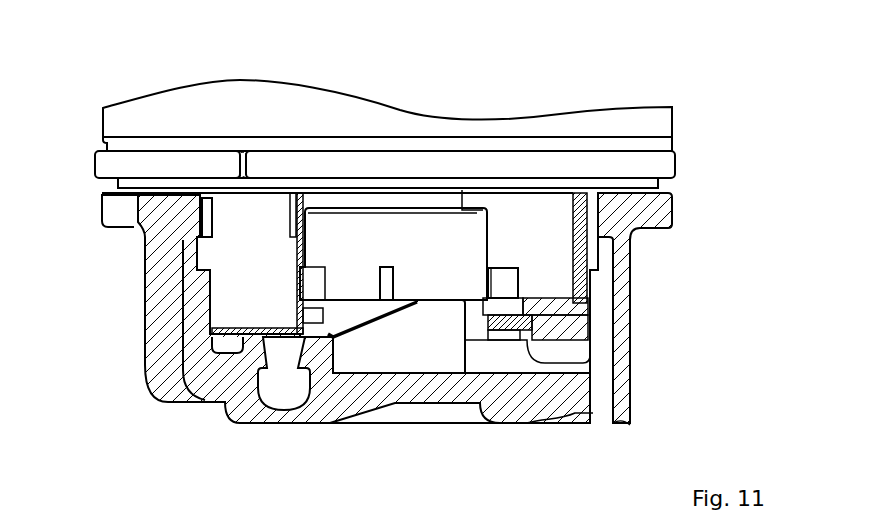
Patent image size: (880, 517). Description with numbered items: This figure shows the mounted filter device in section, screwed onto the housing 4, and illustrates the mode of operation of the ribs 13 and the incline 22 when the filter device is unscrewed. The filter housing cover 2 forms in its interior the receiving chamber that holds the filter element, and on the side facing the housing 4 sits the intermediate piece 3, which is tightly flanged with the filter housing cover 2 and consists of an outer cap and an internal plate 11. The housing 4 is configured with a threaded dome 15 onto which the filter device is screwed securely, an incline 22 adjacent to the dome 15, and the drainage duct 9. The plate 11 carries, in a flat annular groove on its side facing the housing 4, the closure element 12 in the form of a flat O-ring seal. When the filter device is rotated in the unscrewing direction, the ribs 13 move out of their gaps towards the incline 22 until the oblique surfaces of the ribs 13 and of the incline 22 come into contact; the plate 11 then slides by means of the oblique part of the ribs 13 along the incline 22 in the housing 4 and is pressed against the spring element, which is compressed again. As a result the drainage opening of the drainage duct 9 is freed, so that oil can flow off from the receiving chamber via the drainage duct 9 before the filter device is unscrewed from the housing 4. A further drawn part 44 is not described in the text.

The filter housing cover 2 is at (358, 108).
The intermediate piece 3 is at (240, 218).
The housing 4 is at (142, 305).
The drainage duct 9 is at (287, 393).
The plate 11 is at (580, 252).
The closure element 12 is at (580, 350).
The ribs 13 is at (362, 307).
The dome 15 is at (476, 240).
The incline 22 is at (402, 353).
The carrier plate 44 is at (660, 184).